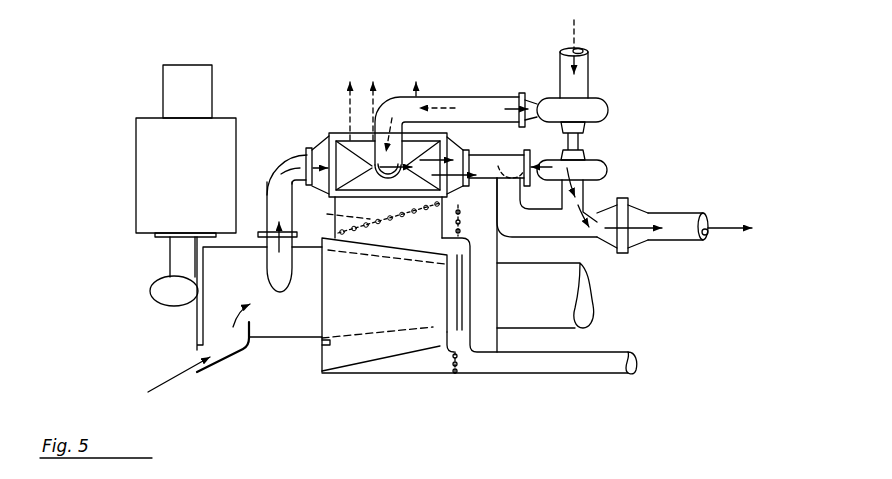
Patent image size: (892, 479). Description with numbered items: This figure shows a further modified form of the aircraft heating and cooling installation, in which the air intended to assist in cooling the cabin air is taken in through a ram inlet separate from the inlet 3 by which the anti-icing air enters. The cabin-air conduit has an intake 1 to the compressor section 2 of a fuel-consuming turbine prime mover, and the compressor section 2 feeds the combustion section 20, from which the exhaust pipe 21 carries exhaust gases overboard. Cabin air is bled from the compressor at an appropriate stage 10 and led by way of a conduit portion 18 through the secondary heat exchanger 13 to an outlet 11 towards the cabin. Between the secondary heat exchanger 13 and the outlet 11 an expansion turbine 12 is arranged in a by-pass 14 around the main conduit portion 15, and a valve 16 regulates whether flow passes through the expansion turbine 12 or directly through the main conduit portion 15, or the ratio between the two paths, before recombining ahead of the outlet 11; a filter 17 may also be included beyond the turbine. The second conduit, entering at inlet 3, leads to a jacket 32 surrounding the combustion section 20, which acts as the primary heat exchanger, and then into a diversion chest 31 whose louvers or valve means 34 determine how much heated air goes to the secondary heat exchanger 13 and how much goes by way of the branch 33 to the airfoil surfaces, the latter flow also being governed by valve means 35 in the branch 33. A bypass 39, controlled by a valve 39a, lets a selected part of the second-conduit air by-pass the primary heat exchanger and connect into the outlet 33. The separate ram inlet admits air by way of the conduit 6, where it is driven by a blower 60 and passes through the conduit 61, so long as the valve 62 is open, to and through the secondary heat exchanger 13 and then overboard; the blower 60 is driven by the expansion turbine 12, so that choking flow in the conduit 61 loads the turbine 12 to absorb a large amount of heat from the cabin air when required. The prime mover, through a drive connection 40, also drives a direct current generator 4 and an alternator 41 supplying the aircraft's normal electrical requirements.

The intake 1 is at (176, 383).
The compressor section 2 is at (263, 334).
The inlet 3 is at (322, 362).
The direct current generator 4 is at (186, 175).
The conduit 6 is at (580, 72).
The bleed stage 10 is at (278, 280).
The outlet 11 is at (670, 215).
The expansion turbine 12 is at (605, 170).
The secondary heat exchanger 13 is at (342, 150).
The by-pass 14 is at (531, 160).
The main conduit portion 15 is at (523, 232).
The valve 16 is at (504, 170).
The filter 17 is at (618, 253).
The conduit portion 18 is at (281, 163).
The combustion section 20 is at (386, 337).
The exhaust pipe 21 is at (596, 312).
The diversion chest 31 is at (415, 250).
The jacket 32 is at (408, 318).
The branch 33 is at (490, 304).
The louvers or valve means 34 is at (372, 217).
The valve means 35 is at (460, 223).
The bypass 39 is at (437, 375).
The valve 39a is at (459, 372).
The drive connection 40 is at (158, 298).
The alternator 41 is at (198, 68).
The blower 60 is at (602, 110).
The conduit 61 is at (487, 98).
The valve 62 is at (442, 105).